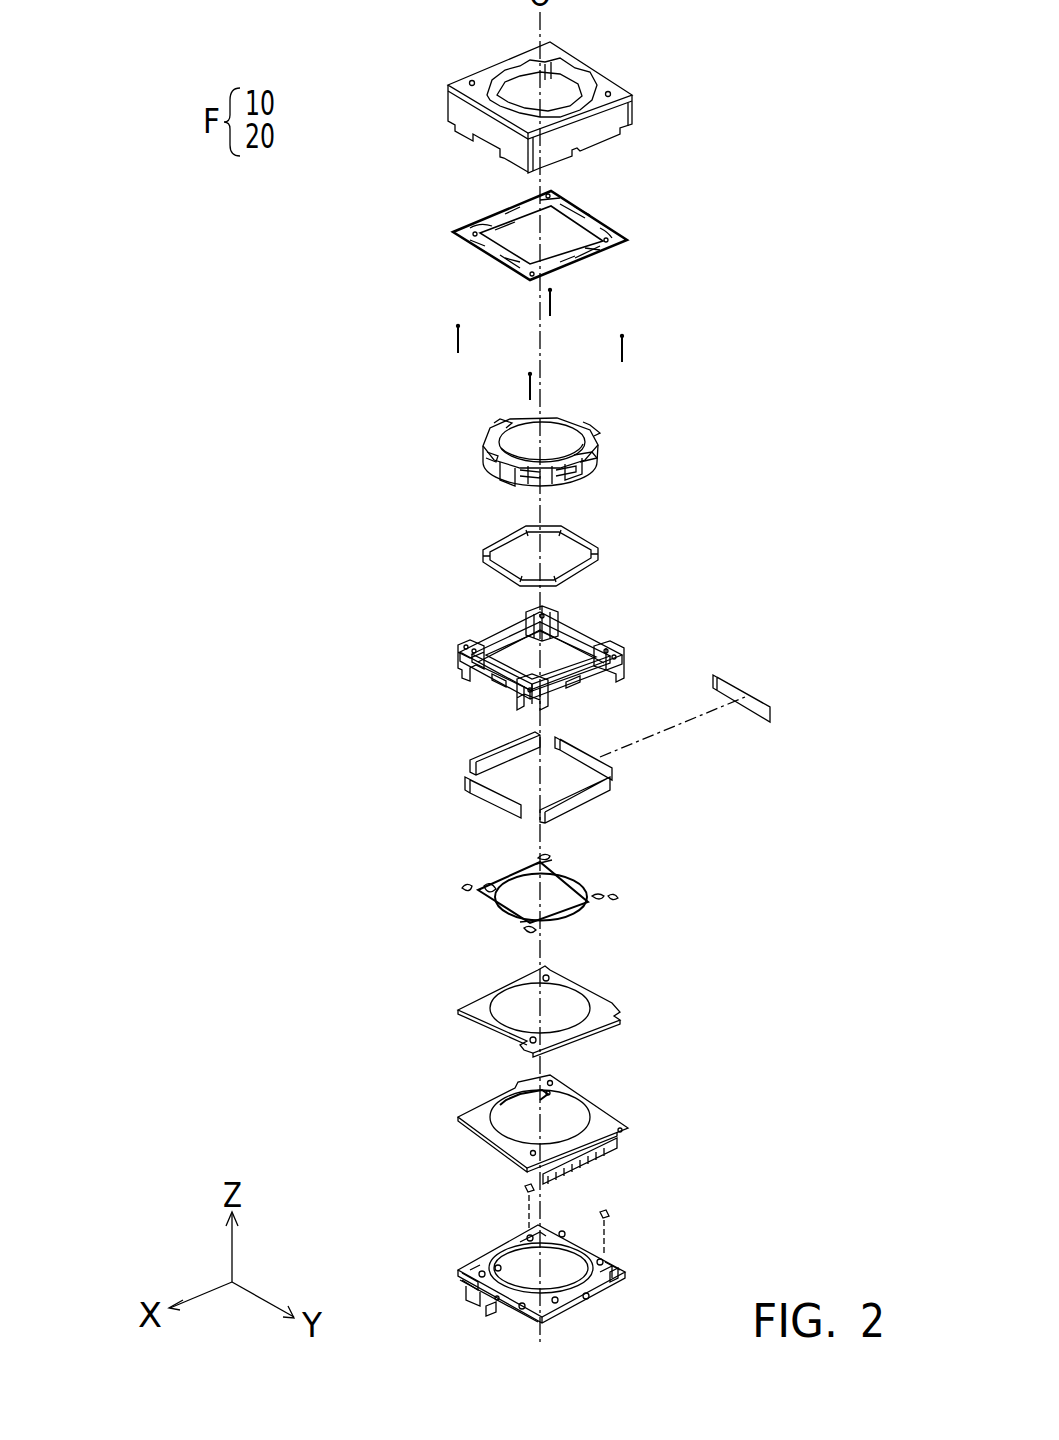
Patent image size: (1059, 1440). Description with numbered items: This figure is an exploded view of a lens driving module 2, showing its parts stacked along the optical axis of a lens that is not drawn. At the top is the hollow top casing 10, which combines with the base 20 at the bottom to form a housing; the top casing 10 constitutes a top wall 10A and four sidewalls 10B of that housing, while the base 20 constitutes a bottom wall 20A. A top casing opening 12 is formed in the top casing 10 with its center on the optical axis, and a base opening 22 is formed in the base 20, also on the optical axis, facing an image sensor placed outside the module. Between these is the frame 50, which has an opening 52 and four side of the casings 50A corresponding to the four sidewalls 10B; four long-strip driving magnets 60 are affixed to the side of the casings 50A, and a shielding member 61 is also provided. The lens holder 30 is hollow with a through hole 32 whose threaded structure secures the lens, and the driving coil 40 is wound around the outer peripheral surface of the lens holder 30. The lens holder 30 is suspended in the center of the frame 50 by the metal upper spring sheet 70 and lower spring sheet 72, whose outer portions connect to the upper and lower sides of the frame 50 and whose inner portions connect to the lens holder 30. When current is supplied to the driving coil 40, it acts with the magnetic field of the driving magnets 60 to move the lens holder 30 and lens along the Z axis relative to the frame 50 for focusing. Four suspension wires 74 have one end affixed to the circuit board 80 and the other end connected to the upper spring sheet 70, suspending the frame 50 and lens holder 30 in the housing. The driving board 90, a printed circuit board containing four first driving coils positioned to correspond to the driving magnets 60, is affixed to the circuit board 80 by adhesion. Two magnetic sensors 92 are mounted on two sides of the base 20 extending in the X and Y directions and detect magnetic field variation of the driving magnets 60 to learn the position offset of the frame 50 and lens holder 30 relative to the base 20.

The lens driving module 2 is at (241, 15).
The top casing 10 is at (450, 104).
The top wall 10A is at (485, 78).
The sidewalls 10B is at (490, 140).
The top casing opening 12 is at (560, 100).
The upper spring sheet 70 is at (457, 231).
The suspension wires 74 is at (622, 350).
The lens holder 30 is at (483, 450).
The through hole 32 is at (560, 455).
The driving coil 40 is at (487, 548).
The frame 50 is at (460, 660).
The side of the casings 50A is at (478, 670).
The opening 52 is at (580, 650).
The driving magnets 60 is at (470, 790).
The shielding member 61 is at (735, 690).
The lower spring sheet 72 is at (465, 889).
The driving board 90 is at (462, 1011).
The circuit board 80 is at (455, 1118).
The magnetic sensors 92 is at (523, 1190).
The base opening 22 is at (520, 1258).
The base 20 is at (458, 1271).
The bottom wall 20A is at (488, 1286).